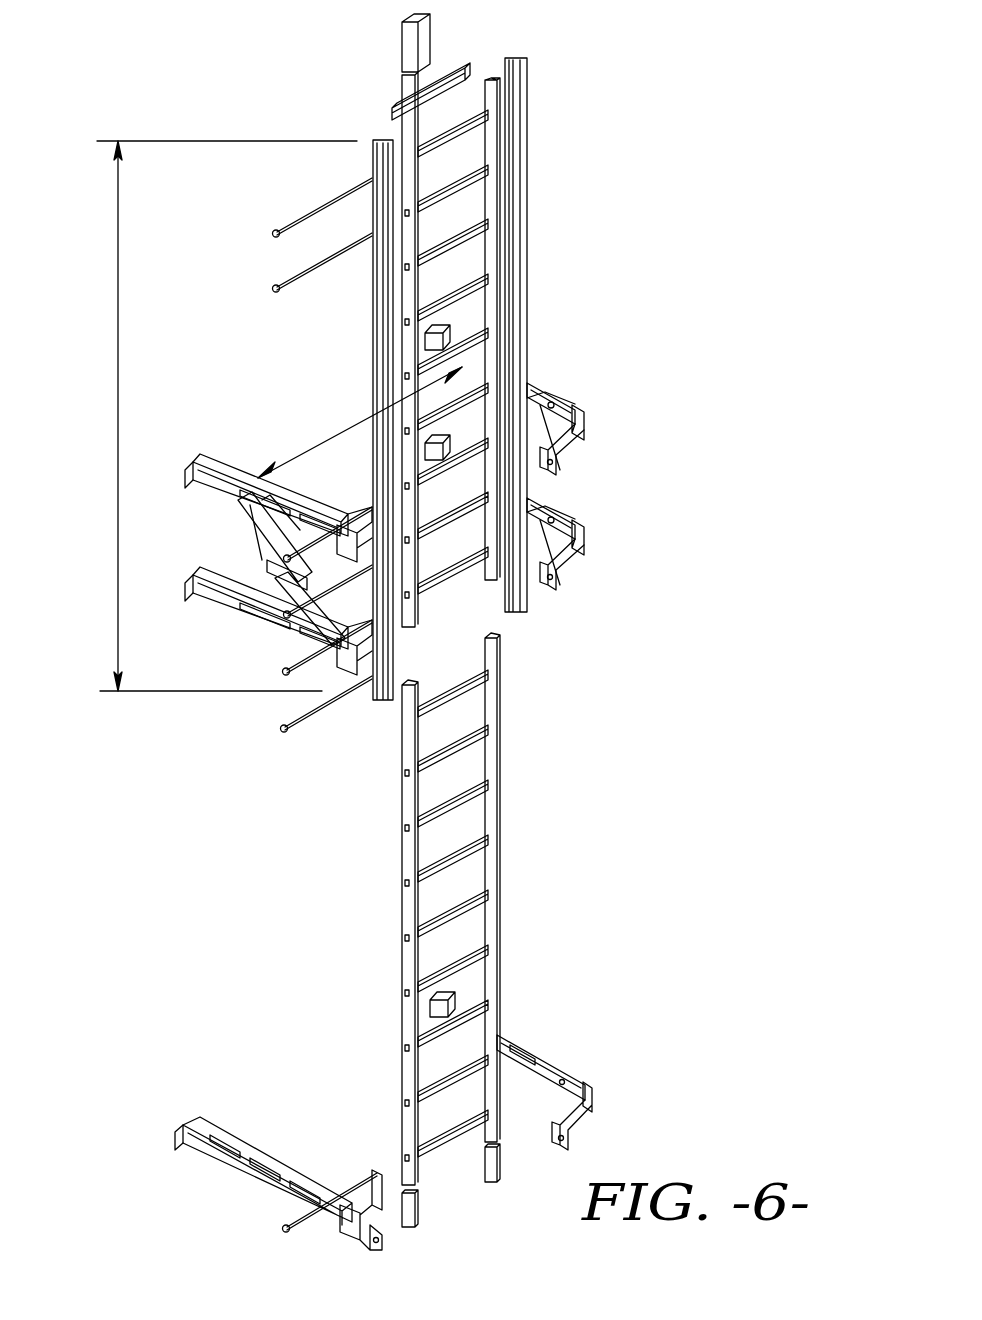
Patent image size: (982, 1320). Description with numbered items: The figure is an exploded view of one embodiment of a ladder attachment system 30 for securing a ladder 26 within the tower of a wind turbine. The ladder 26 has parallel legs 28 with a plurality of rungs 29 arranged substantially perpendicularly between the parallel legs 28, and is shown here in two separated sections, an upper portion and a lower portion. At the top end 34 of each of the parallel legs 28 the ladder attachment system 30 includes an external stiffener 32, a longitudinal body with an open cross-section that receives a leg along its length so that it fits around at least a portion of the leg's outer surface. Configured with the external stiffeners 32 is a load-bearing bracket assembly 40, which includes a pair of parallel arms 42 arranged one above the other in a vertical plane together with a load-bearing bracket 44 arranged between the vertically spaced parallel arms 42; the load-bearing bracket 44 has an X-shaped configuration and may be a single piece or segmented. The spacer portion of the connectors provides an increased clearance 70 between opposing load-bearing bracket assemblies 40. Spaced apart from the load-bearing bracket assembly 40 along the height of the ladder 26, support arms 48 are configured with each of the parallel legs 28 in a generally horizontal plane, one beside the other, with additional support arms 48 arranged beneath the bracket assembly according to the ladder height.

The ladder 26 is at (503, 755).
The parallel legs 28 is at (500, 913).
The rungs 29 is at (437, 870).
The ladder attachment system 30 is at (680, 198).
The external stiffener 32 is at (530, 218).
The top end 34 is at (117, 347).
The load-bearing bracket assembly 40 is at (267, 633).
The parallel arms 42 is at (236, 460).
The load-bearing bracket 44 is at (245, 545).
The support arm 48 is at (545, 1050).
The clearance 70 is at (355, 425).